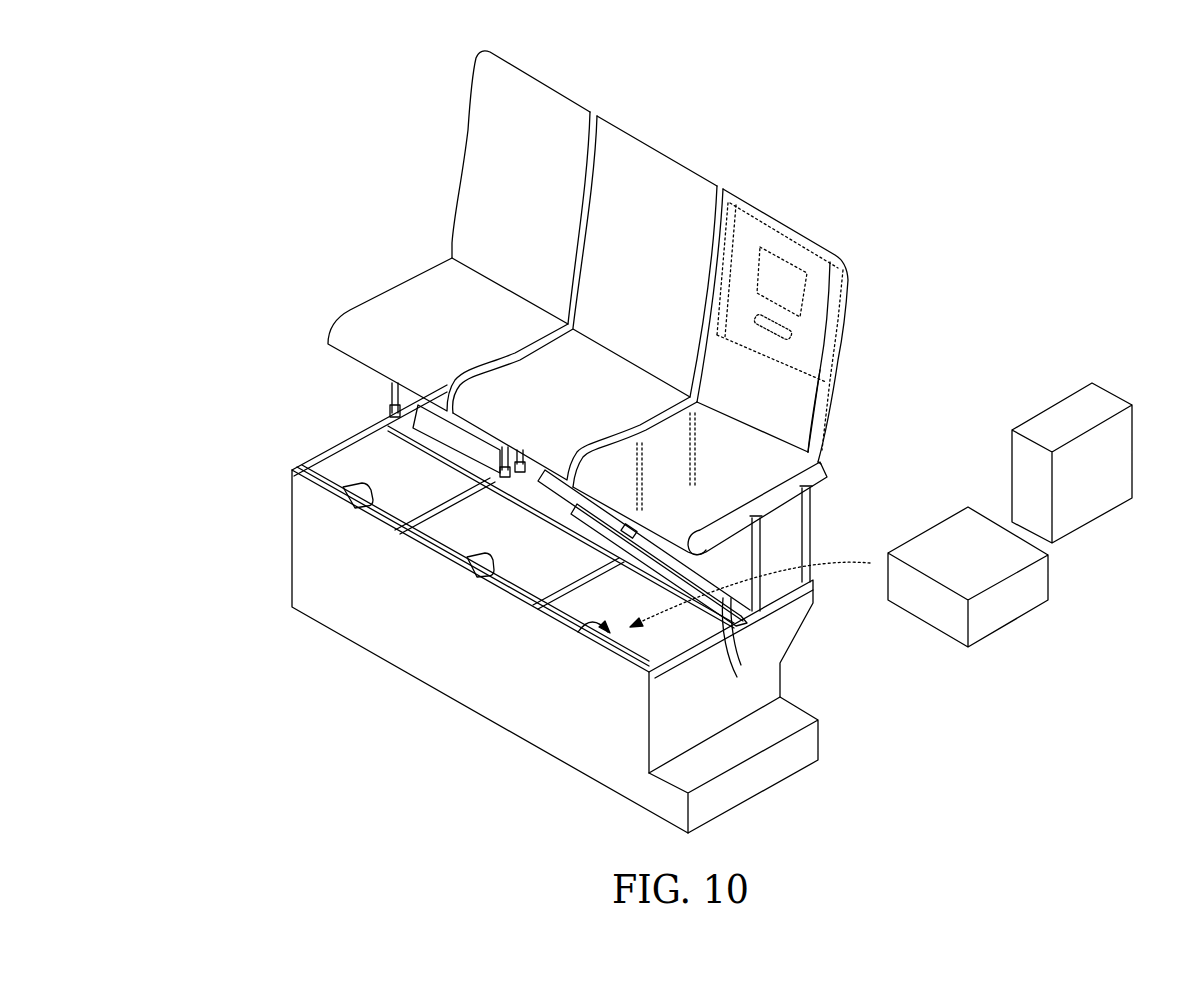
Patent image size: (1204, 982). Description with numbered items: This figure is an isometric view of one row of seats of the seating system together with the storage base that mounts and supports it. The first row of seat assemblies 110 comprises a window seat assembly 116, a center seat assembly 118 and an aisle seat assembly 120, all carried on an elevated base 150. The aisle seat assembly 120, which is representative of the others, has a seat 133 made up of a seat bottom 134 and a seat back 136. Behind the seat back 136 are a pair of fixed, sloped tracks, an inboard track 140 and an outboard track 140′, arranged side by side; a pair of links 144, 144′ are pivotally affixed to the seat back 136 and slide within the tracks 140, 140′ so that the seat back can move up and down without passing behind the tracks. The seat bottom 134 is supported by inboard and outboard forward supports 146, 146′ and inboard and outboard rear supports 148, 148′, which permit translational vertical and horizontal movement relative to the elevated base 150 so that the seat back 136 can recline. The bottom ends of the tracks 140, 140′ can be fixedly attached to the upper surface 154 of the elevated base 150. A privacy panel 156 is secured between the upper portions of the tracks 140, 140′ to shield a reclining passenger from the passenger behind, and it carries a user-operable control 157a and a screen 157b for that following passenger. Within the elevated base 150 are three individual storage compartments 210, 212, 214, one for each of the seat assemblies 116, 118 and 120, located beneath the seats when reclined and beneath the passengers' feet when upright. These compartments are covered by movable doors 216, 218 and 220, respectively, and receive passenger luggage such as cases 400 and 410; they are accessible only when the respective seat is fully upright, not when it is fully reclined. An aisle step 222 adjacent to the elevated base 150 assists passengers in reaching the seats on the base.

The first row of seat assemblies 110 is at (583, 432).
The window seat assembly 116 is at (528, 92).
The center seat assembly 118 is at (657, 167).
The aisle seat assembly 120 is at (787, 220).
The seat 133 is at (837, 405).
The seat bottom 134 is at (753, 477).
The seat back 136 is at (783, 388).
The inboard track 140 is at (838, 337).
The outboard track 140′ is at (720, 267).
The link 144 is at (842, 283).
The link 144′ is at (725, 208).
The inboard forward support 146 is at (760, 556).
The outboard forward support 146′ is at (636, 462).
The inboard rear support 148 is at (813, 542).
The outboard rear support 148′ is at (688, 433).
The elevated base 150 is at (457, 630).
The upper surface 154 is at (727, 655).
The privacy panel 156 is at (810, 247).
The user-operable control 157a is at (793, 340).
The screen 157b is at (803, 297).
The storage compartment 210 is at (345, 528).
The storage compartment 212 is at (445, 586).
The storage compartment 214 is at (578, 632).
The movable door 216 is at (347, 463).
The movable door 218 is at (475, 527).
The movable door 220 is at (650, 567).
The aisle step 222 is at (743, 750).
The case 400 is at (1012, 608).
The case 410 is at (1090, 493).